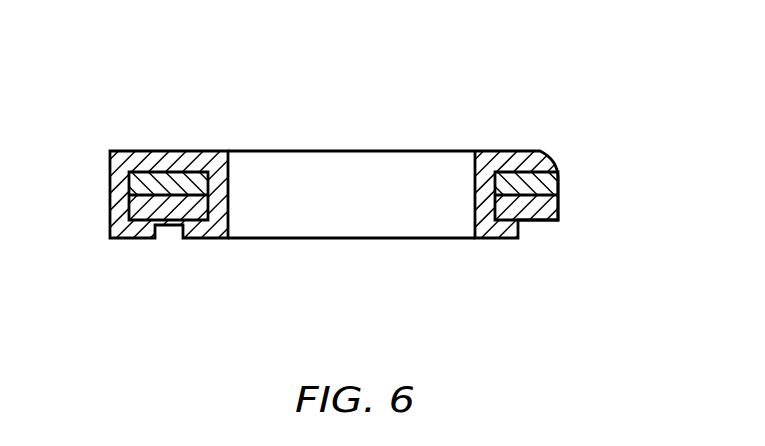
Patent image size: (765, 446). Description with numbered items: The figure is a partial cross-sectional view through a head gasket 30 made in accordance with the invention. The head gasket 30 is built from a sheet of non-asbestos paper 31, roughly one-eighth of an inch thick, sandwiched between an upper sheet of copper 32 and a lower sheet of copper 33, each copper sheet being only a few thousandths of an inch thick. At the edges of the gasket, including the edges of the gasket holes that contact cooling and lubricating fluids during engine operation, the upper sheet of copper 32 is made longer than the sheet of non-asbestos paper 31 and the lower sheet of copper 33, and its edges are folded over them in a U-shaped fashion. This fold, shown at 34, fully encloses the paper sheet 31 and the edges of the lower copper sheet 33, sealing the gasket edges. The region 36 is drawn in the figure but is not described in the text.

The head gasket 30 is at (493, 127).
The sheet of non-asbestos paper 31 is at (558, 182).
The upper sheet of copper 32 is at (543, 159).
The lower sheet of copper 33 is at (557, 209).
The folded edge seal 34 is at (108, 221).
The central opening 36 is at (318, 175).